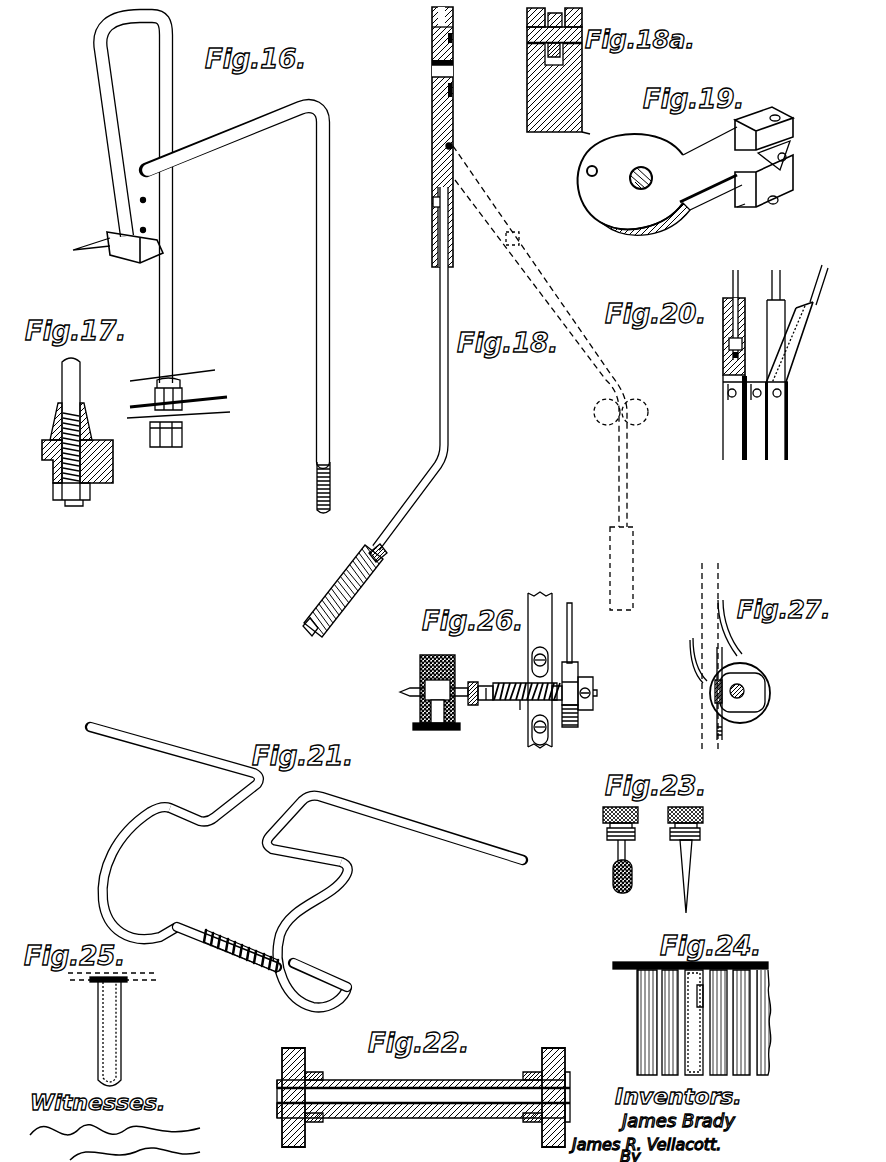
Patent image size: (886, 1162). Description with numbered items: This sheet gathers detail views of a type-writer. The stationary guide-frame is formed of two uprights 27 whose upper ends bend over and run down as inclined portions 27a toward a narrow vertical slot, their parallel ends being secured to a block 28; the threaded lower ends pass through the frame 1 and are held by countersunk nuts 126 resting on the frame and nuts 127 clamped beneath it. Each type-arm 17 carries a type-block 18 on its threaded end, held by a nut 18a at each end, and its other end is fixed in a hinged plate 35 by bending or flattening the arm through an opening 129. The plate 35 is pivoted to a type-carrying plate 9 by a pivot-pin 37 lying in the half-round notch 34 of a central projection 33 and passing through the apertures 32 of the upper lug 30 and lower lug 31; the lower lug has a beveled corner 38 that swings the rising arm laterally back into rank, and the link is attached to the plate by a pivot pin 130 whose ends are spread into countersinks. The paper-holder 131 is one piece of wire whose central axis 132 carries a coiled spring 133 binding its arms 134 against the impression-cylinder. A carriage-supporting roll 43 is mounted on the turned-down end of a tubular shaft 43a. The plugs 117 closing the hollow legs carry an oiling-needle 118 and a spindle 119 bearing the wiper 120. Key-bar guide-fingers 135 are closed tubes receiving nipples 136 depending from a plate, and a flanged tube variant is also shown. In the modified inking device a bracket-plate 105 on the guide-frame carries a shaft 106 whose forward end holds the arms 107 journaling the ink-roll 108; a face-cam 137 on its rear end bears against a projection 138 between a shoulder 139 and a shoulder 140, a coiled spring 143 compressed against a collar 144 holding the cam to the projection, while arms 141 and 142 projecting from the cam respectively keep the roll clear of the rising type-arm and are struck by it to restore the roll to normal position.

In FIG. 16, the frame 1 is at (196, 390).
In FIG. 17, the frame 1 is at (107, 465).
In FIG. 18, the type-carrying plate 9 is at (432, 92).
In FIG. 18A, the type-carrying plate 9 is at (527, 90).
In FIG. 19, the type-carrying plate 9 is at (660, 181).
In FIG. 20, the type-carrying plate 9 is at (763, 380).
In FIG. 18, the type-arm 17 is at (440, 327).
In FIG. 20, the type-arm 17 is at (784, 362).
In FIG. 18, the type-block 18 is at (343, 591).
In FIG. 18, the nut 18a is at (385, 551).
In FIG. 16, the upright 27 is at (185, 204).
In FIG. 17, the upright 27 is at (80, 370).
In FIG. 26, the upright 27 is at (528, 640).
In FIG. 27, the upright 27 is at (708, 654).
In FIG. 16, the inclined portion 27a is at (120, 112).
In FIG. 16, the block 28 is at (125, 255).
In FIG. 19, the upper lug 30 is at (790, 113).
In FIG. 19, the lower lug 31 is at (790, 184).
In FIG. 19, the aperture 32 is at (769, 121).
In FIG. 19, the central projection 33 is at (757, 157).
In FIG. 19, the half-round notch 34 is at (787, 152).
In FIG. 18, the plate 35 is at (456, 227).
In FIG. 20, the plate 35 is at (723, 335).
In FIG. 18, the pivot-pin 37 is at (432, 145).
In FIG. 20, the pivot-pin 37 is at (782, 394).
In FIG. 19, the beveled corner 38 is at (755, 209).
In FIG. 20, the beveled corner 38 is at (726, 388).
In FIG. 22, the roll 43 is at (426, 1089).
In FIG. 22, the tubular shaft 43a is at (423, 1089).
In FIG. 26, the bracket-plate 105 is at (545, 680).
In FIG. 26, the shaft 106 is at (518, 702).
In FIG. 26, the arm 107 is at (420, 686).
In FIG. 26, the ink-roll 108 is at (436, 684).
In FIG. 23, the plug 117 is at (670, 833).
In FIG. 23, the oiling-needle 118 is at (699, 876).
In FIG. 23, the spindle 119 is at (618, 852).
In FIG. 23, the wiper 120 is at (613, 880).
In FIG. 16, the nut 126 is at (176, 382).
In FIG. 17, the nut 126 is at (87, 418).
In FIG. 16, the nut 127 is at (163, 447).
In FIG. 17, the nut 127 is at (88, 498).
In FIG. 18, the opening 129 is at (432, 203).
In FIG. 20, the opening 129 is at (742, 345).
In FIG. 18A, the pivot pin 130 is at (566, 54).
In FIG. 21, the paper-holder 131 is at (225, 907).
In FIG. 21, the axis 132 is at (189, 928).
In FIG. 21, the spring 133 is at (241, 948).
In FIG. 21, the arm 134 is at (306, 794).
In FIG. 25, the guide-finger 135 is at (121, 1022).
In FIG. 24, the nipple 136 is at (640, 1000).
In FIG. 26, the face-cam 137 is at (578, 670).
In FIG. 26, the projection 138 is at (594, 684).
In FIG. 26, the shoulder 139 is at (598, 692).
In FIG. 26, the shoulder 140 is at (562, 727).
In FIG. 27, the arm 141 is at (690, 637).
In FIG. 26, the arm 142 is at (572, 630).
In FIG. 27, the arm 142 is at (729, 623).
In FIG. 26, the coiled spring 143 is at (522, 704).
In FIG. 26, the collar 144 is at (486, 702).